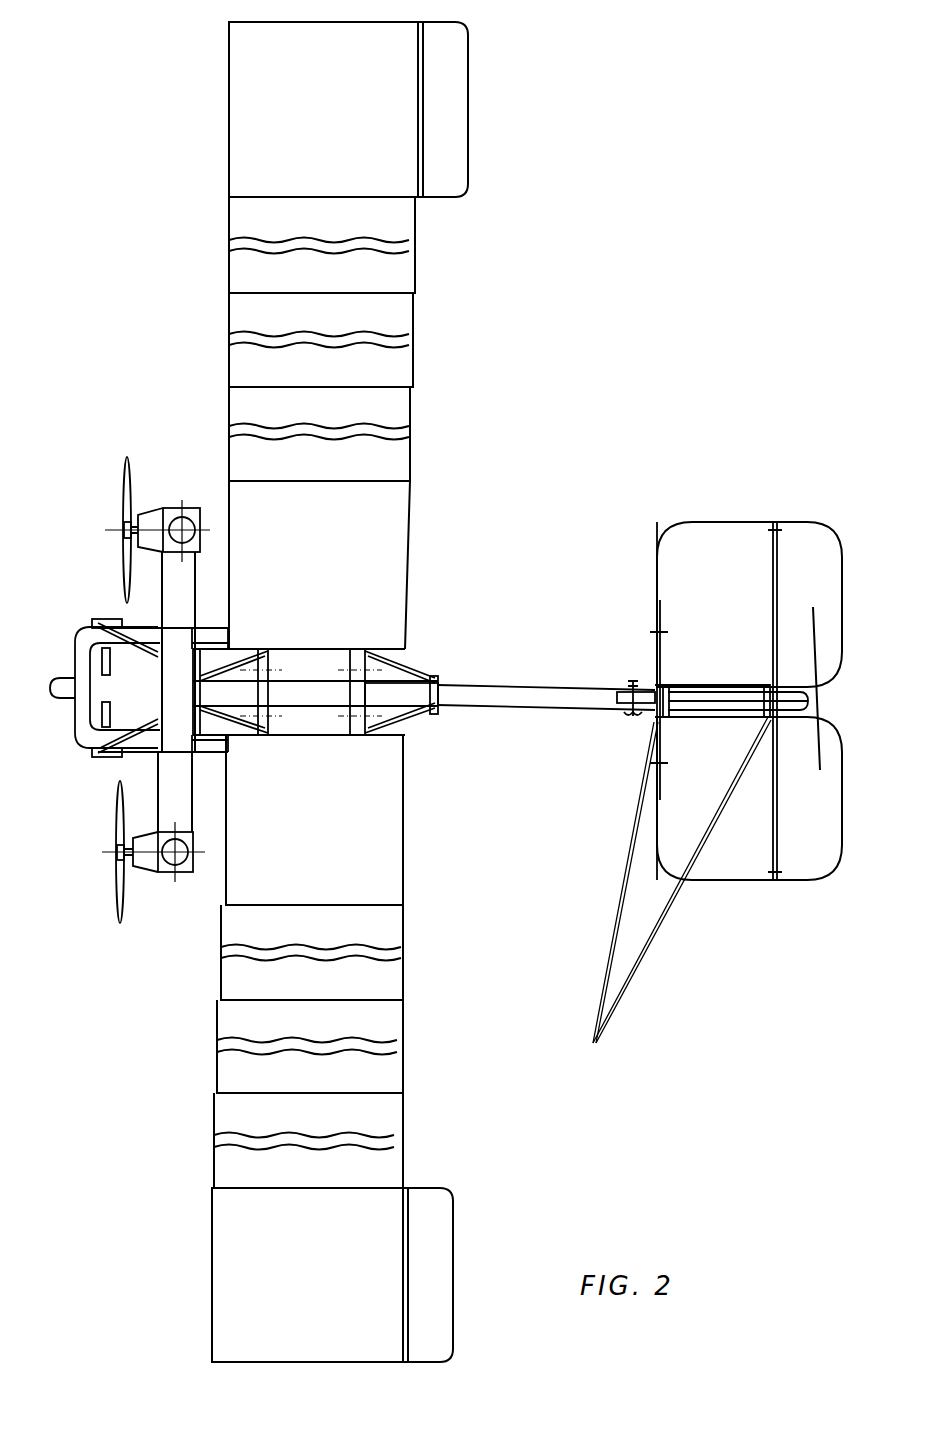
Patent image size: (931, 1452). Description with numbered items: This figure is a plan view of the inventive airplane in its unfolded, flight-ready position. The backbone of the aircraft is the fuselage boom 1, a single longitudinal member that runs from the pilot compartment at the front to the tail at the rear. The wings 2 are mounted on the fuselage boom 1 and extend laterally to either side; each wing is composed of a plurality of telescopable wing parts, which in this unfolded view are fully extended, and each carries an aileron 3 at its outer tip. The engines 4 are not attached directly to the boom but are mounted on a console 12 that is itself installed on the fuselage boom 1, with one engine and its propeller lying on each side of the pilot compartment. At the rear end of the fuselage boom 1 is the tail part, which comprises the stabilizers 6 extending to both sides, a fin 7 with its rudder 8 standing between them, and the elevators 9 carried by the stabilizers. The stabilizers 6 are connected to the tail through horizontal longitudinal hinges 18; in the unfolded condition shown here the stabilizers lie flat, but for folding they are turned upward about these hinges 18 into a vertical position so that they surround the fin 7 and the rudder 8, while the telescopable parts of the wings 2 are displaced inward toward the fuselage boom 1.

The fuselage boom 1 is at (510, 695).
The wings 2 is at (384, 548).
The ailerons 3 is at (455, 175).
The engines 4 is at (182, 558).
The stabilizers 6 is at (683, 753).
The fin 7 is at (728, 702).
The rudder 8 is at (773, 657).
The elevators 9 is at (813, 607).
The console 12 is at (170, 807).
The horizontal longitudinal hinges 18 is at (650, 1043).